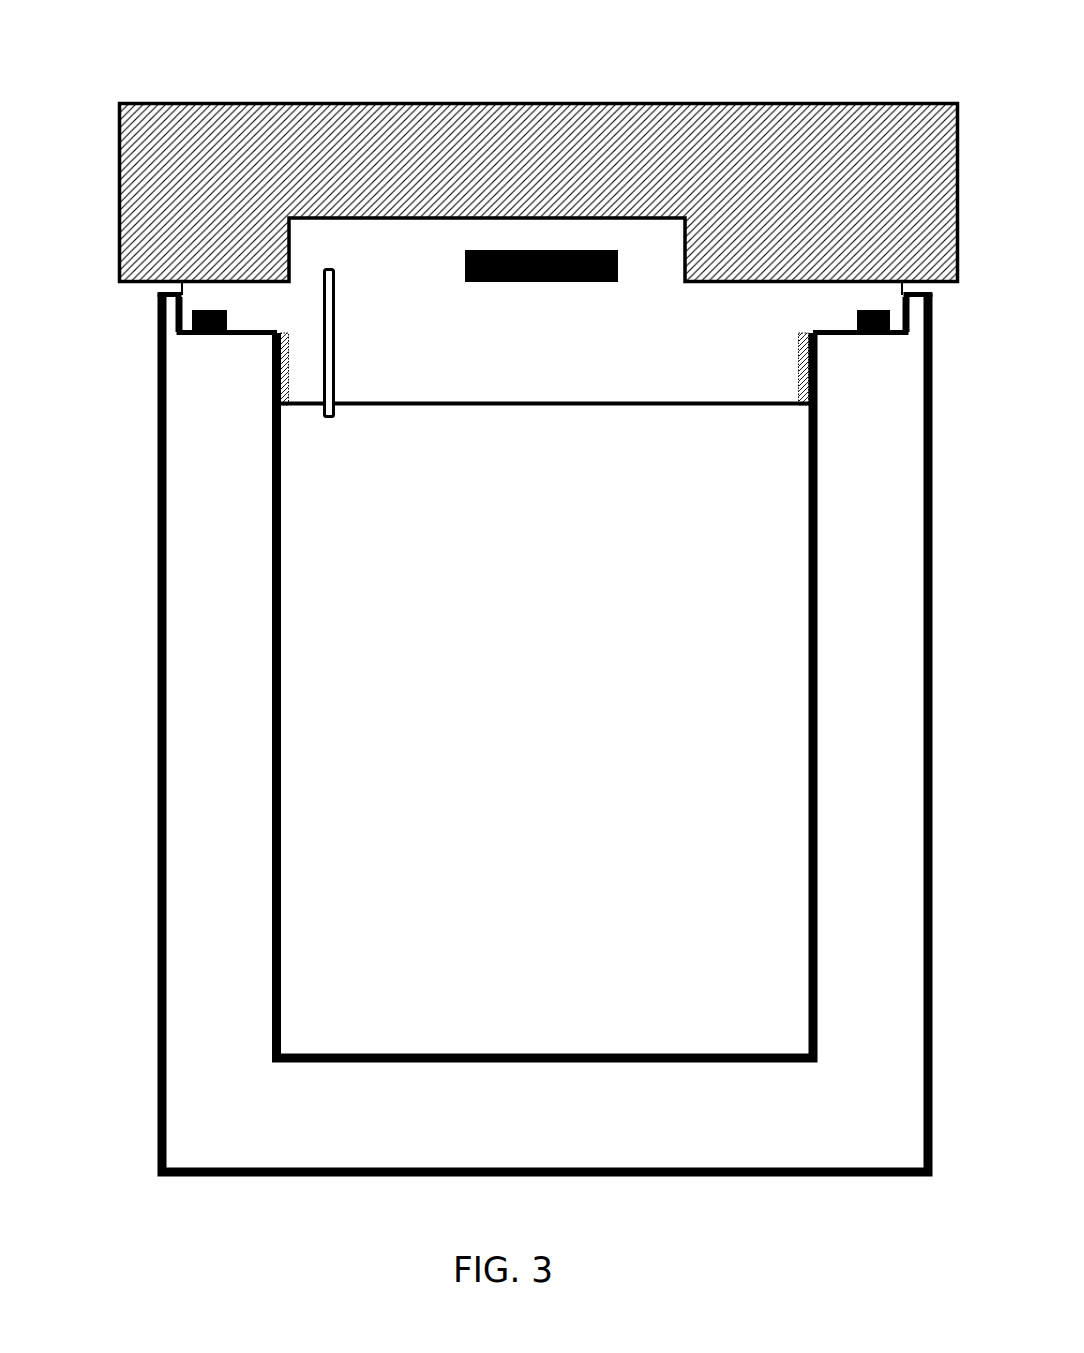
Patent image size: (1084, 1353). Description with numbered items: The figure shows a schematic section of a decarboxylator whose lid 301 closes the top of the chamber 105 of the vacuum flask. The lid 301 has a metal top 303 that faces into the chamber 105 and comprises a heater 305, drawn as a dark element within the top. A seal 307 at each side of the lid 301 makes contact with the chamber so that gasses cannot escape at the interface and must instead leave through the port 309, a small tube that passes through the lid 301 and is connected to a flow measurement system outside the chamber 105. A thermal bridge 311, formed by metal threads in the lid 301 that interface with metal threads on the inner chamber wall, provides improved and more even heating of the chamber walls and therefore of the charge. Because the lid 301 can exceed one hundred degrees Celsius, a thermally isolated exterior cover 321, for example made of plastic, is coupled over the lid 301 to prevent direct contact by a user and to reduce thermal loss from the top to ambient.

The lid 301 is at (182, 84).
The thermally isolated exterior cover 321 is at (748, 130).
The heater 305 is at (517, 250).
The metal top 303 is at (428, 360).
The seal 307 is at (200, 336).
The chamber 105 is at (577, 756).
The thermal bridge 311 is at (806, 385).
The port 309 is at (331, 418).